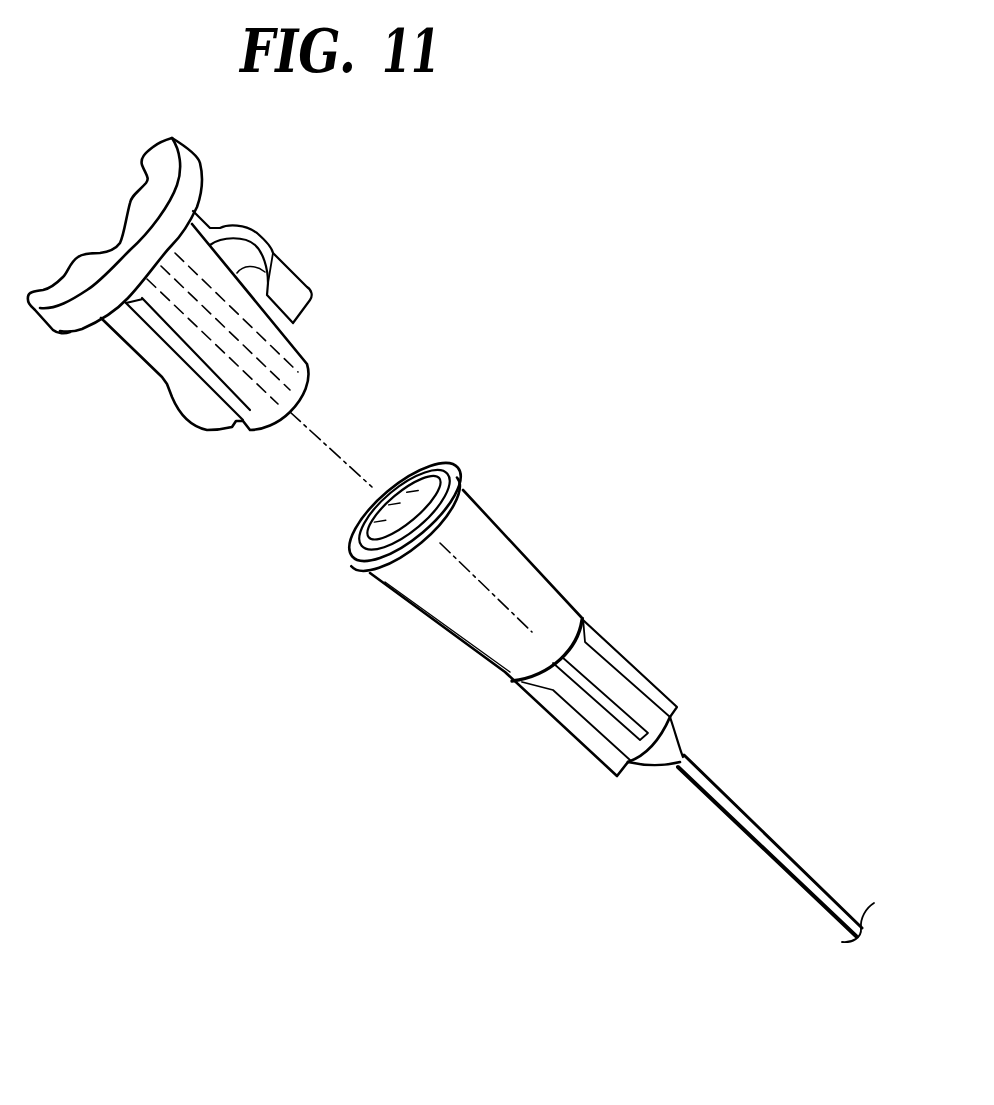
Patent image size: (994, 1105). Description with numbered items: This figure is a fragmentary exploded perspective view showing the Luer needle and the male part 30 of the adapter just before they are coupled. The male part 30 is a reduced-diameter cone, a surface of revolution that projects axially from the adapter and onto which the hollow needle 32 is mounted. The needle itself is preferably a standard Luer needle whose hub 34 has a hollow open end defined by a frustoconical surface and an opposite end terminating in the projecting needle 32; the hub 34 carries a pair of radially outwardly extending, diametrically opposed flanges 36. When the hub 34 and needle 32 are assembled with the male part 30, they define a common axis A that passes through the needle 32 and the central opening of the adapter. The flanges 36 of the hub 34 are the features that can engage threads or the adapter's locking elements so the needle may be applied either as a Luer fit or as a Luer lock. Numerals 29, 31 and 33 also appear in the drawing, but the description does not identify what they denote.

The cap flange 29 is at (105, 326).
The male part 30 is at (186, 332).
The rib 31 is at (250, 427).
The needle 32 is at (725, 800).
The bore 33 is at (263, 373).
The hub 34 is at (463, 610).
The flanges 36 is at (430, 574).
The axis A is at (497, 593).